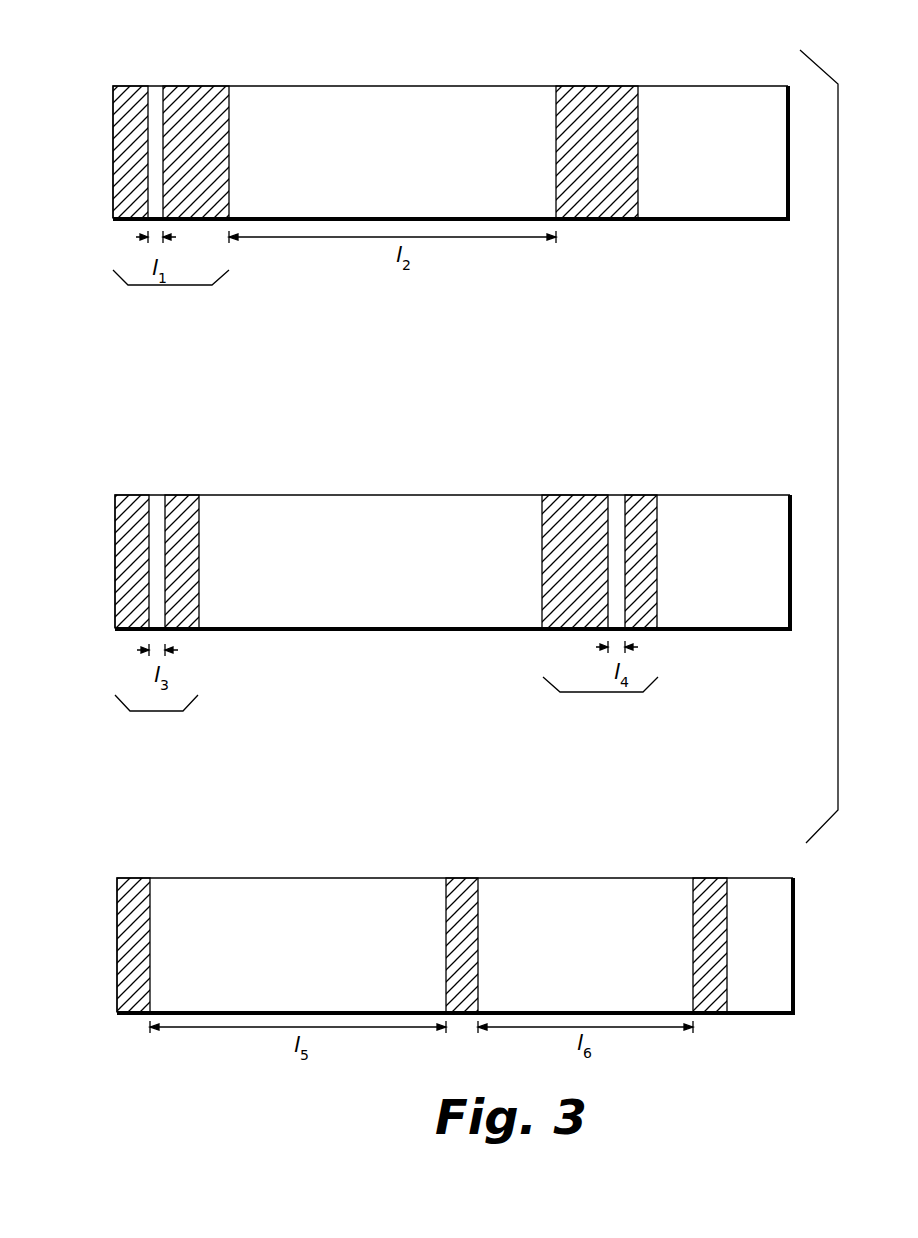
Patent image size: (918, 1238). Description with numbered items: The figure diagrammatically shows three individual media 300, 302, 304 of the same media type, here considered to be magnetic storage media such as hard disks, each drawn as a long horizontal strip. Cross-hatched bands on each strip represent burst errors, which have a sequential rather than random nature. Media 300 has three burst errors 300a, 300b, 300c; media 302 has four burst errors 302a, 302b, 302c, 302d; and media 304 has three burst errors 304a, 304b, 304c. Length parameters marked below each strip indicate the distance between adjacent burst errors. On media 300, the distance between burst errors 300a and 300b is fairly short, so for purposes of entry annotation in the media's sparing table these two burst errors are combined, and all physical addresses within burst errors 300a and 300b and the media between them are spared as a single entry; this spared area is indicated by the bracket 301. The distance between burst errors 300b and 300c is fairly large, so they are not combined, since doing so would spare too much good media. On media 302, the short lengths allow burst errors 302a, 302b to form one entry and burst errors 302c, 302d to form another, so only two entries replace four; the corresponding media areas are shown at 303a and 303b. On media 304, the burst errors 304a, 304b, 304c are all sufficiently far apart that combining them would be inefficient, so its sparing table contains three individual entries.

The media 300 is at (415, 120).
The burst error 300a is at (131, 86).
The burst error 300b is at (196, 86).
The burst error 300c is at (598, 85).
The spared area 301 is at (181, 285).
The media 302 is at (416, 530).
The burst error 302a is at (131, 495).
The burst error 302b is at (183, 495).
The burst error 302c is at (577, 494).
The burst error 302d is at (641, 494).
The media area 303a is at (168, 711).
The media area 303b is at (604, 692).
The media 304 is at (419, 914).
The burst error 304a is at (133, 878).
The burst error 304b is at (453, 877).
The burst error 304c is at (710, 877).